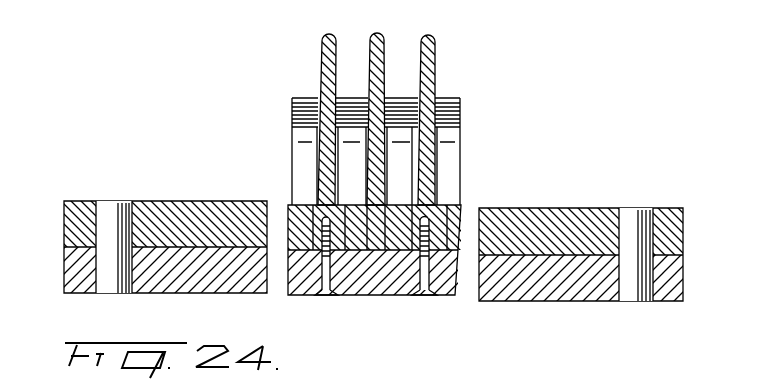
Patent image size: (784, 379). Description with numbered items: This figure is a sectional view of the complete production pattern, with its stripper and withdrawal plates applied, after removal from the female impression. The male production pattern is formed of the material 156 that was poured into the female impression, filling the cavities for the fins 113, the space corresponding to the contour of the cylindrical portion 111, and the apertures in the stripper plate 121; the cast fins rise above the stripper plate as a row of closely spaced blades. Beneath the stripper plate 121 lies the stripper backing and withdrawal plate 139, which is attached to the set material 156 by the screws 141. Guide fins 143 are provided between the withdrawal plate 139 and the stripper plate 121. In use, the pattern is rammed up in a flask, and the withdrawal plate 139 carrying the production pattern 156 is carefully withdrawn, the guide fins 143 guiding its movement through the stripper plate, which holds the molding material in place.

The cylindrical portion 111 is at (457, 120).
The fins 113 is at (422, 42).
The stripper plate 121 is at (64, 226).
The stripper backing and withdrawal plate 139 is at (70, 273).
The screws 141 is at (415, 298).
The guide fins 143 is at (110, 212).
The material 156 is at (327, 172).